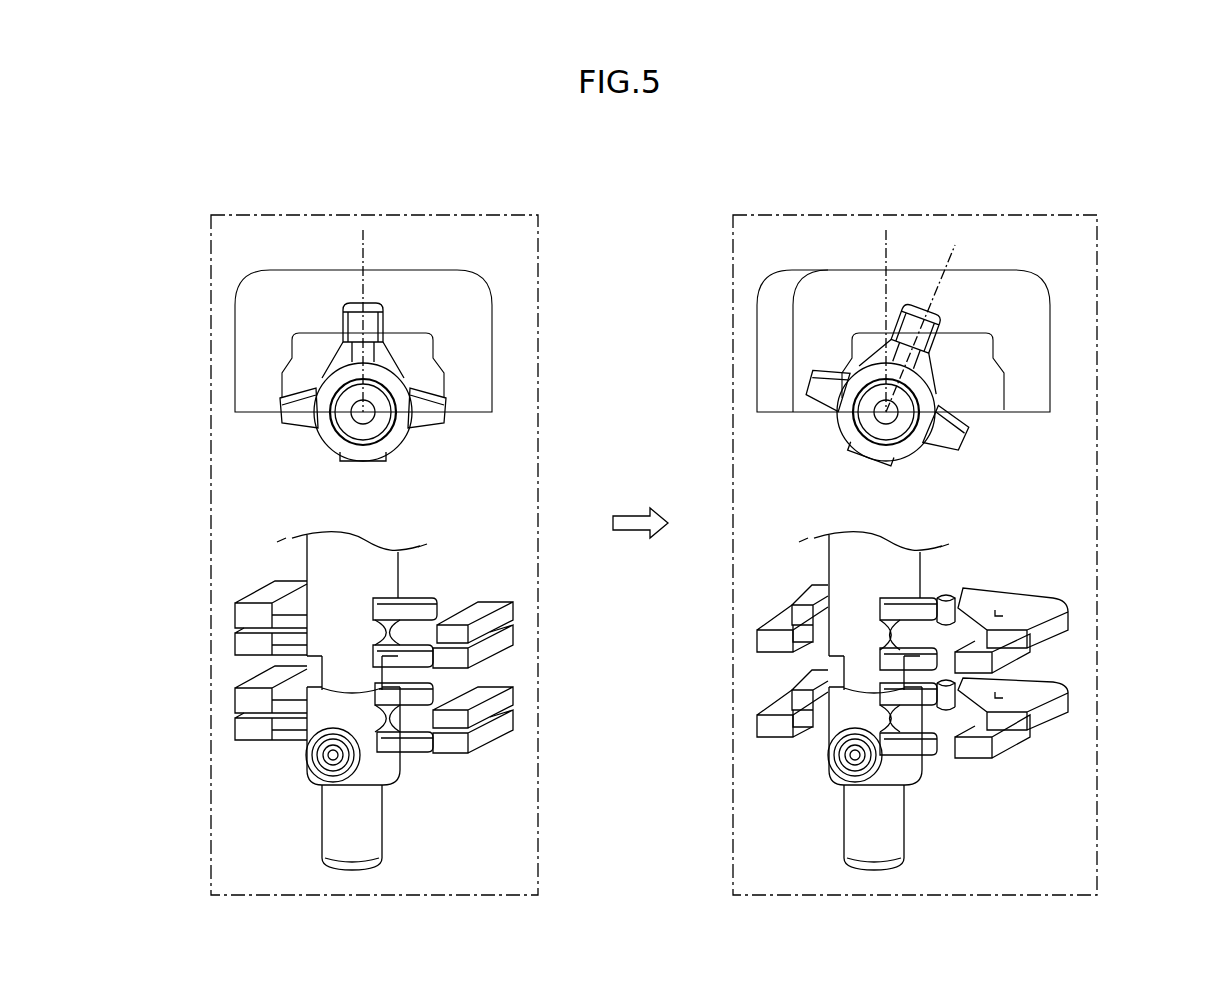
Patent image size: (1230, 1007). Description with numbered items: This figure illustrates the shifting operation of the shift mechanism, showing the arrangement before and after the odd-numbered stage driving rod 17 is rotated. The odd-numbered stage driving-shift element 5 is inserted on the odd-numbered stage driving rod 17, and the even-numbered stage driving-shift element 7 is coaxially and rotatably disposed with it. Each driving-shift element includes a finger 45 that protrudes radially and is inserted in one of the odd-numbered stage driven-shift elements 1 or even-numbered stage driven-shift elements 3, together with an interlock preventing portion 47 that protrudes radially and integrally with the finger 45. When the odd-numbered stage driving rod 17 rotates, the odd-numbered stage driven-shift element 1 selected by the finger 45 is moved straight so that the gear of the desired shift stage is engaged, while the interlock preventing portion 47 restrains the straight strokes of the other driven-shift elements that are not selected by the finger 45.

The odd-numbered stage driven-shift elements 1 is at (240, 693).
The even-numbered stage driven-shift elements 3 is at (240, 609).
The odd-numbered stage driving-shift element 5 is at (413, 735).
The even-numbered stage driving-shift element 7 is at (482, 596).
The odd-numbered stage driving rod 17 is at (328, 827).
The finger 45 is at (372, 318).
The interlock preventing portion 47 is at (280, 418).